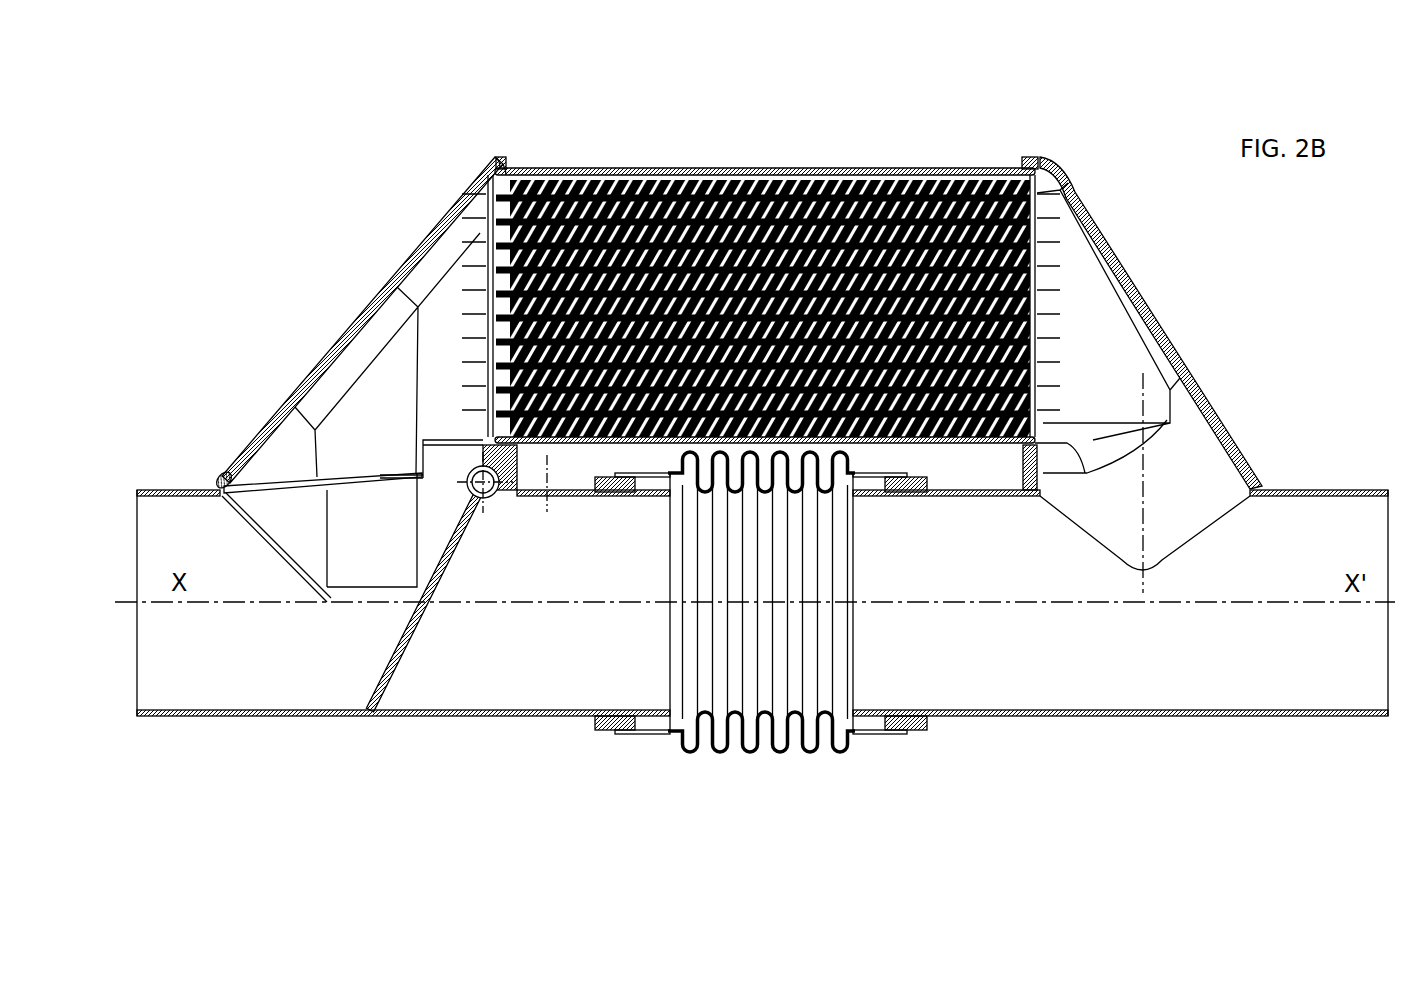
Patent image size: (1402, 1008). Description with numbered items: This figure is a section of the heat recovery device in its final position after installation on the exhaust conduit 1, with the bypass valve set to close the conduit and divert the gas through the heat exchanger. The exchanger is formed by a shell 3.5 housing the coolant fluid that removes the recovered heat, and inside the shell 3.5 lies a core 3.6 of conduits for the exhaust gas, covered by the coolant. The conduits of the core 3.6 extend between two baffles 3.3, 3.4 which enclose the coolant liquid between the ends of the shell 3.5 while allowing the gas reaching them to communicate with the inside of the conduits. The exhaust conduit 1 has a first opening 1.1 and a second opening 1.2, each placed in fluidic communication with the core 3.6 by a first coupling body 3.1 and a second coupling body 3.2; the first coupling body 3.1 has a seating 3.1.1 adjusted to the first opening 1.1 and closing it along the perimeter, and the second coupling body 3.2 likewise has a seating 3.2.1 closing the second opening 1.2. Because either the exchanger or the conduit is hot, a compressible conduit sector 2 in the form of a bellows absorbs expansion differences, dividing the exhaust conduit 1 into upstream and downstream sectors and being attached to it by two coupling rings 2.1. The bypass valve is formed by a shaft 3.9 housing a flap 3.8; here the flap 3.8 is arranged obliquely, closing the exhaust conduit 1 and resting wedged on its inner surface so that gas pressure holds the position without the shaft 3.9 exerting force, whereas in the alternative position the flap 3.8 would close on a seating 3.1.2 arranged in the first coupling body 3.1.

The exhaust conduit 1 is at (420, 716).
The first opening 1.1 is at (242, 518).
The second opening 1.2 is at (1185, 548).
The compressible conduit sector 2 is at (783, 754).
The coupling ring 2.1 is at (600, 730).
The first coupling body 3.1 is at (405, 258).
The seating of the first coupling body 3.1.1 is at (332, 584).
The seating for the flap 3.1.2 is at (228, 476).
The second coupling body 3.2 is at (1165, 315).
The seating of the second coupling body 3.2.1 is at (1205, 527).
The baffle 3.3 is at (541, 162).
The baffle 3.4 is at (1000, 160).
The shell 3.5 is at (761, 170).
The core 3.6 is at (661, 178).
The flap 3.8 is at (392, 650).
The shaft 3.9 is at (468, 490).